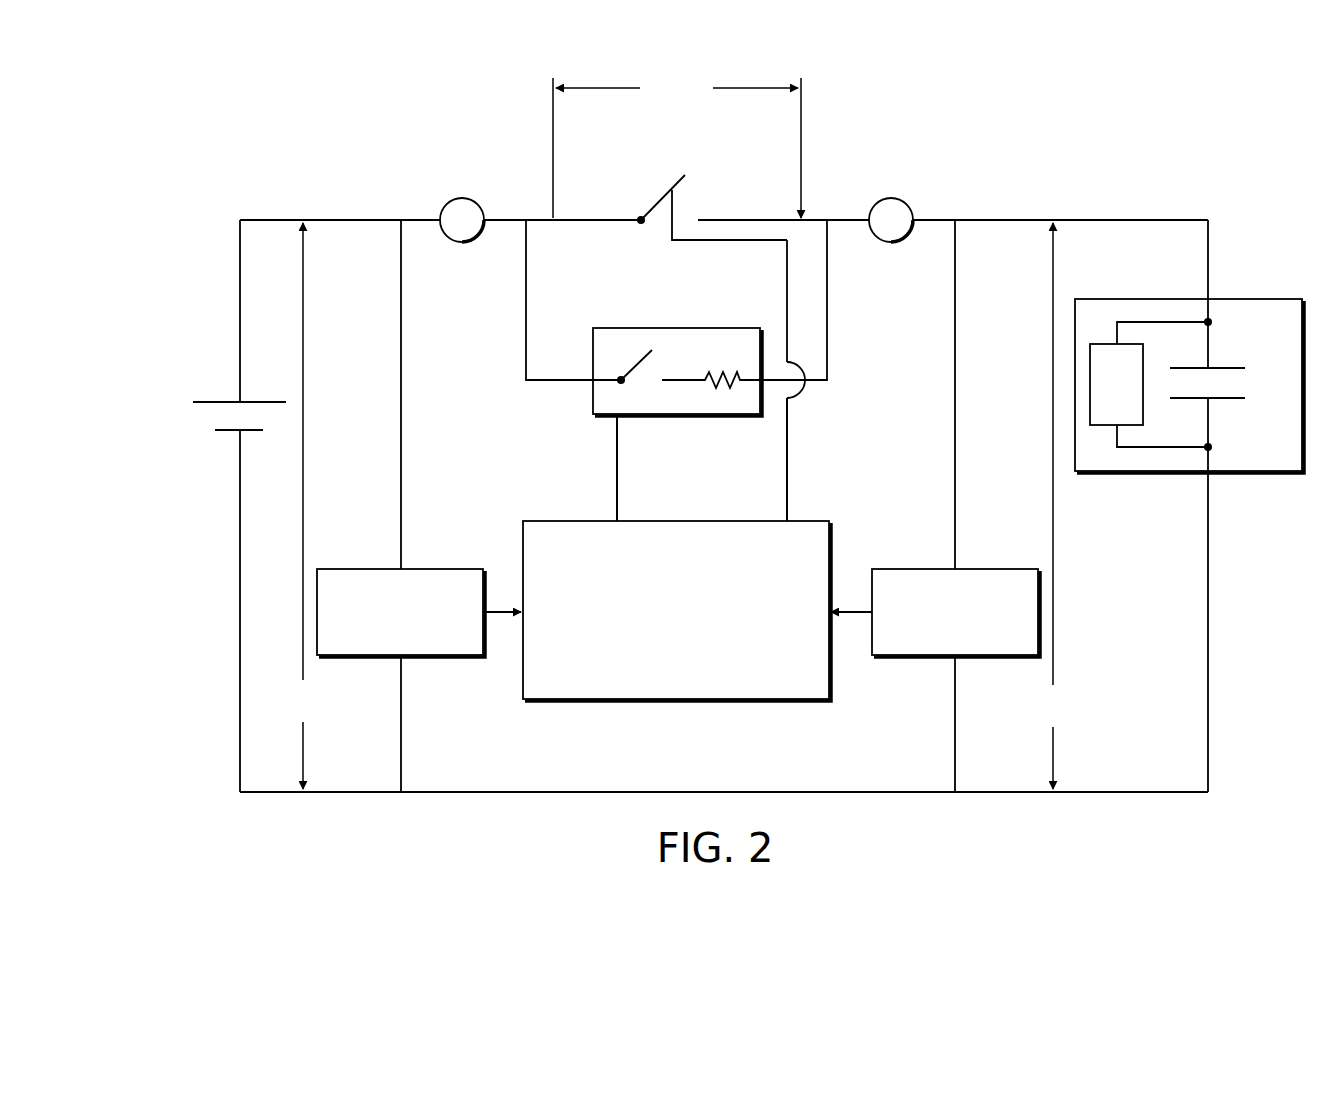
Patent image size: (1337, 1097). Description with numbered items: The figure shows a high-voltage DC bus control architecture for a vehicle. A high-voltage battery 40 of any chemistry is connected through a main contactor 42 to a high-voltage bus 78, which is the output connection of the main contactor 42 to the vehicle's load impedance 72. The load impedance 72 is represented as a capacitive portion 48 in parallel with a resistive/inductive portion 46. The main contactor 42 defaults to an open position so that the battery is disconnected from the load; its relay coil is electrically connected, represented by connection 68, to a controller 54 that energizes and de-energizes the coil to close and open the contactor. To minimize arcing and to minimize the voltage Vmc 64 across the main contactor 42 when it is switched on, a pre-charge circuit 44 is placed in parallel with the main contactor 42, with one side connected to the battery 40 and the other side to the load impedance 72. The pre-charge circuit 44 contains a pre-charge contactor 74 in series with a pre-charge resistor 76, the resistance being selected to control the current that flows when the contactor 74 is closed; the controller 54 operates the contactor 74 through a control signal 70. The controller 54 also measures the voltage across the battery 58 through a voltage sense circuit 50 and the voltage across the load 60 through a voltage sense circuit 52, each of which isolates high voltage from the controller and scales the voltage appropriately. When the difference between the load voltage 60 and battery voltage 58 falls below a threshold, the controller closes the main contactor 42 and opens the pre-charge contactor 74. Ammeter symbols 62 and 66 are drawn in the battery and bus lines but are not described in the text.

The high-voltage battery 40 is at (215, 400).
The main contactor 42 is at (653, 207).
The pre-charge circuit 44 is at (621, 328).
The resistive/inductive portion 46 is at (1116, 384).
The capacitive portion 48 is at (1225, 366).
The voltage sense circuit 50 is at (380, 569).
The voltage sense circuit 52 is at (885, 569).
The controller 54 is at (675, 520).
The voltage across the high-voltage battery 58 is at (303, 506).
The voltage across the load 60 is at (1053, 506).
The ammeter 62 is at (460, 197).
The voltage across the main contactor Vmc 64 is at (745, 88).
The ammeter 66 is at (890, 197).
The electrical connection to the main contactor coil 68 is at (787, 435).
The control signal 70 is at (617, 485).
The load impedance 72 is at (1189, 417).
The pre-charge contactor 74 is at (633, 359).
The pre-charge resistor 76 is at (720, 383).
The high-voltage bus 78 is at (1090, 220).